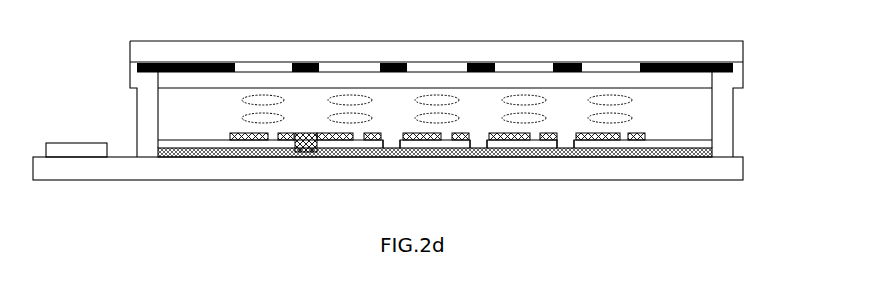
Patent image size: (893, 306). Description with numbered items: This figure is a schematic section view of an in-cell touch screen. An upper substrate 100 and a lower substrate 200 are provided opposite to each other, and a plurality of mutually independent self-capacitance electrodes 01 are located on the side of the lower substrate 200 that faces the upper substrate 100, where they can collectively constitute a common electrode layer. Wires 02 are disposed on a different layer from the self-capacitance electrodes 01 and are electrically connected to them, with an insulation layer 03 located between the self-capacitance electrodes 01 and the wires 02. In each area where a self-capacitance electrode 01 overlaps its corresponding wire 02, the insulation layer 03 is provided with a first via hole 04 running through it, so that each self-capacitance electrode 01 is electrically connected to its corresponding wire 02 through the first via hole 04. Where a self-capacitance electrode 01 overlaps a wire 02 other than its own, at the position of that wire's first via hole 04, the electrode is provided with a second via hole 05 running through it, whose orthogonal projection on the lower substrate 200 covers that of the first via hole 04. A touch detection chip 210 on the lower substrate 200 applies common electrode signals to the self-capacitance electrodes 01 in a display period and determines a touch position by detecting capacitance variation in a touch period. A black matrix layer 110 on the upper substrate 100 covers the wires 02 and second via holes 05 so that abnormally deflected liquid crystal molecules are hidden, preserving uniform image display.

The upper substrate 100 is at (722, 47).
The black matrix layer 110 is at (298, 63).
The lower substrate 200 is at (722, 170).
The touch detection chip 210 is at (97, 150).
The self-capacitance electrode 01 is at (230, 135).
The wire 02 is at (203, 158).
The insulation layer 03 is at (365, 155).
The first via hole 04 is at (482, 145).
The second via hole 05 is at (565, 138).